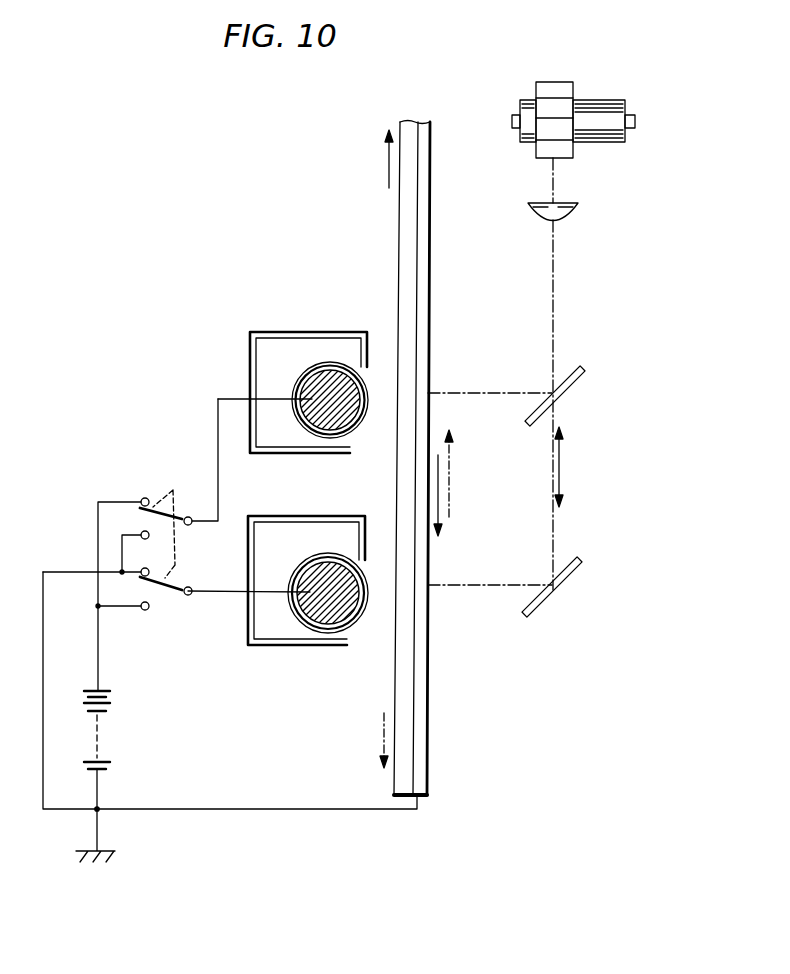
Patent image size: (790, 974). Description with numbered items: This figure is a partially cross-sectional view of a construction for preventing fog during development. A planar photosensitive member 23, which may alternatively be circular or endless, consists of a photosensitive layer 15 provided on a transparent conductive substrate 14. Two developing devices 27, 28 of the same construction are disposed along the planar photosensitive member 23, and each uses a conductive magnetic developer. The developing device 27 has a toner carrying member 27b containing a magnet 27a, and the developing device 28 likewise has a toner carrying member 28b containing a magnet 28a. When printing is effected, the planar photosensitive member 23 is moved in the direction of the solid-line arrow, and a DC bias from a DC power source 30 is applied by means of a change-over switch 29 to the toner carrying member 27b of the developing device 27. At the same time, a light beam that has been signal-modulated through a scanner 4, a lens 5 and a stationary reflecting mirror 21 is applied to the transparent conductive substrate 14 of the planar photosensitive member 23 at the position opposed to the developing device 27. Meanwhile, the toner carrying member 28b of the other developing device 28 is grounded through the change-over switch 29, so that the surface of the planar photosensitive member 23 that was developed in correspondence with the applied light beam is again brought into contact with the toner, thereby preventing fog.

The scanner 4 is at (556, 82).
The lens 5 is at (565, 218).
The transparent conductive substrate 14 is at (428, 213).
The photosensitive layer 15 is at (405, 214).
The stationary reflecting mirror 21 is at (572, 389).
The planar photosensitive member 23 is at (433, 101).
The developing device 27 is at (270, 330).
The magnet 27a is at (330, 378).
The toner carrying member 27b is at (298, 385).
The developing device 28 is at (250, 648).
The magnet 28a is at (328, 612).
The toner carrying member 28b is at (303, 622).
The change-over switch 29 is at (158, 506).
The DC power source 30 is at (113, 706).